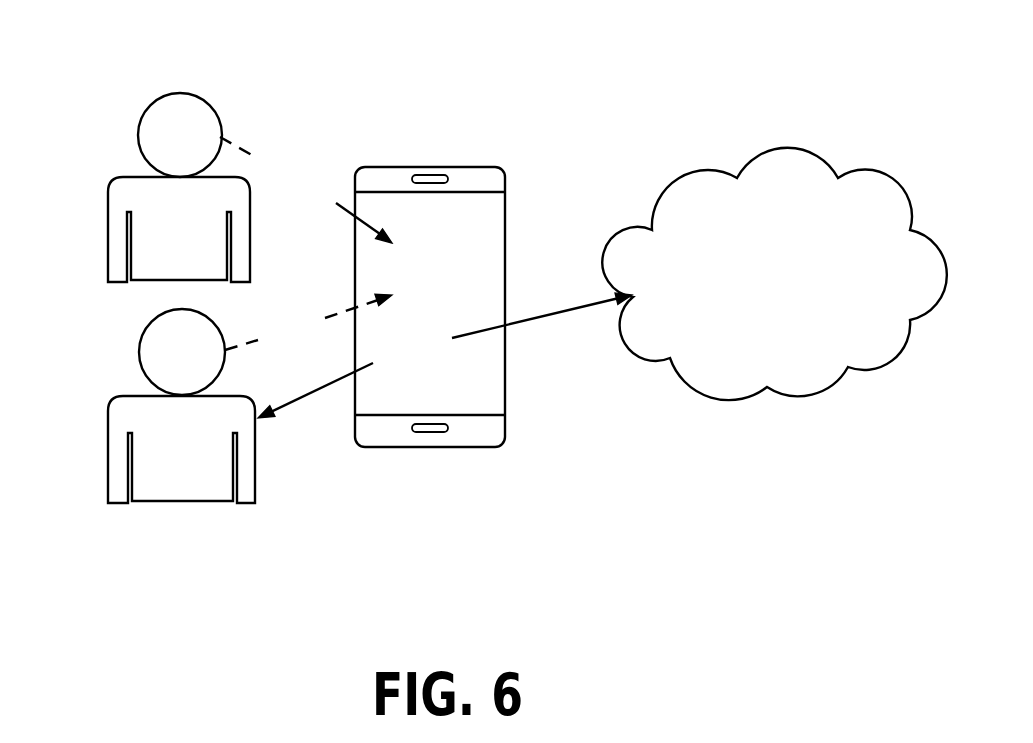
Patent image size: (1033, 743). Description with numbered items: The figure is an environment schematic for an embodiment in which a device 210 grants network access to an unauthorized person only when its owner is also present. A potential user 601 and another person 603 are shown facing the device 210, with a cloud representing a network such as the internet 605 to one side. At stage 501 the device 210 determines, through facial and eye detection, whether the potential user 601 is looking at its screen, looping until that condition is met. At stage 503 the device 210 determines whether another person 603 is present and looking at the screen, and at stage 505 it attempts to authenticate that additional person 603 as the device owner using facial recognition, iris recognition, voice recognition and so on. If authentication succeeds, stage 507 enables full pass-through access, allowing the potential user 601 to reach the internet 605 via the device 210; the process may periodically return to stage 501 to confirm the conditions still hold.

The device 210 is at (370, 172).
The potential user 601 is at (132, 403).
The another person 603 is at (130, 187).
The internet 605 is at (799, 297).
The stage 501 is at (308, 322).
The stage 503 is at (328, 194).
The stage 505 is at (275, 172).
The stage 507 is at (445, 355).